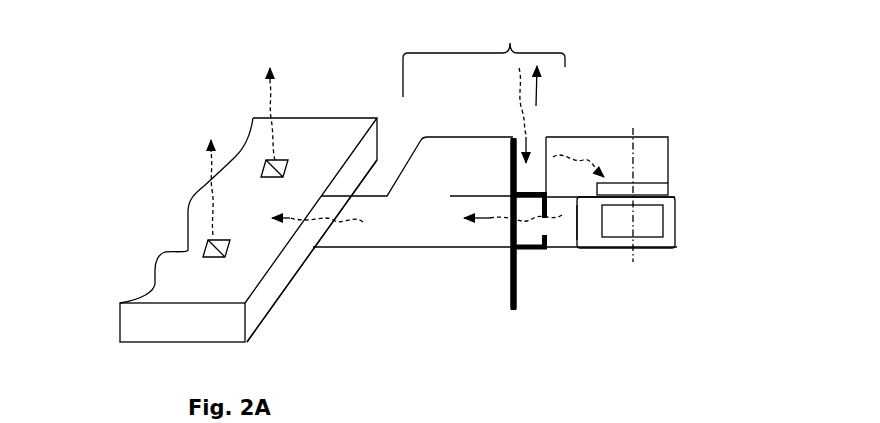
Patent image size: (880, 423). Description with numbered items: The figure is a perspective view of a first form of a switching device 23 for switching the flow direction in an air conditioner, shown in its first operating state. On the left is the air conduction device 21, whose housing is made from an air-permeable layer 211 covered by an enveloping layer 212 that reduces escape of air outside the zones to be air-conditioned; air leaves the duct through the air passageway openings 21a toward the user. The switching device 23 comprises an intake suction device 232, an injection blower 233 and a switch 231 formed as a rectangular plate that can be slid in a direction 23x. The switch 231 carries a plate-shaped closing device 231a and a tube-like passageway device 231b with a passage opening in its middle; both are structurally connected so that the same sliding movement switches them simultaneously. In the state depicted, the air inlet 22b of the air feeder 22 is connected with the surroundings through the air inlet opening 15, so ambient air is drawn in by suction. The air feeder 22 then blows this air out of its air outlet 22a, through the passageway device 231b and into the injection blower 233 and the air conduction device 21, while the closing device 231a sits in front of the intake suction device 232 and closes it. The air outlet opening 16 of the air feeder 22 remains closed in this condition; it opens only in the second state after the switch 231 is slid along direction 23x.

The air conduction device 21 is at (290, 118).
The air passageway openings 21a is at (260, 175).
The air-permeable layer 211 is at (255, 312).
The enveloping layer 212 is at (140, 346).
The switching device 23 is at (484, 60).
The sliding direction 23x is at (540, 102).
The intake suction device 232 is at (485, 140).
The switch 231 is at (536, 190).
The closing device 231a is at (508, 160).
The passageway device 231b is at (509, 234).
The injection blower 233 is at (476, 228).
The air inlet opening 15 is at (532, 132).
The air feeder 22 is at (594, 228).
The air outlet 22a is at (552, 227).
The air inlet 22b is at (624, 181).
The air outlet opening 16 is at (531, 256).